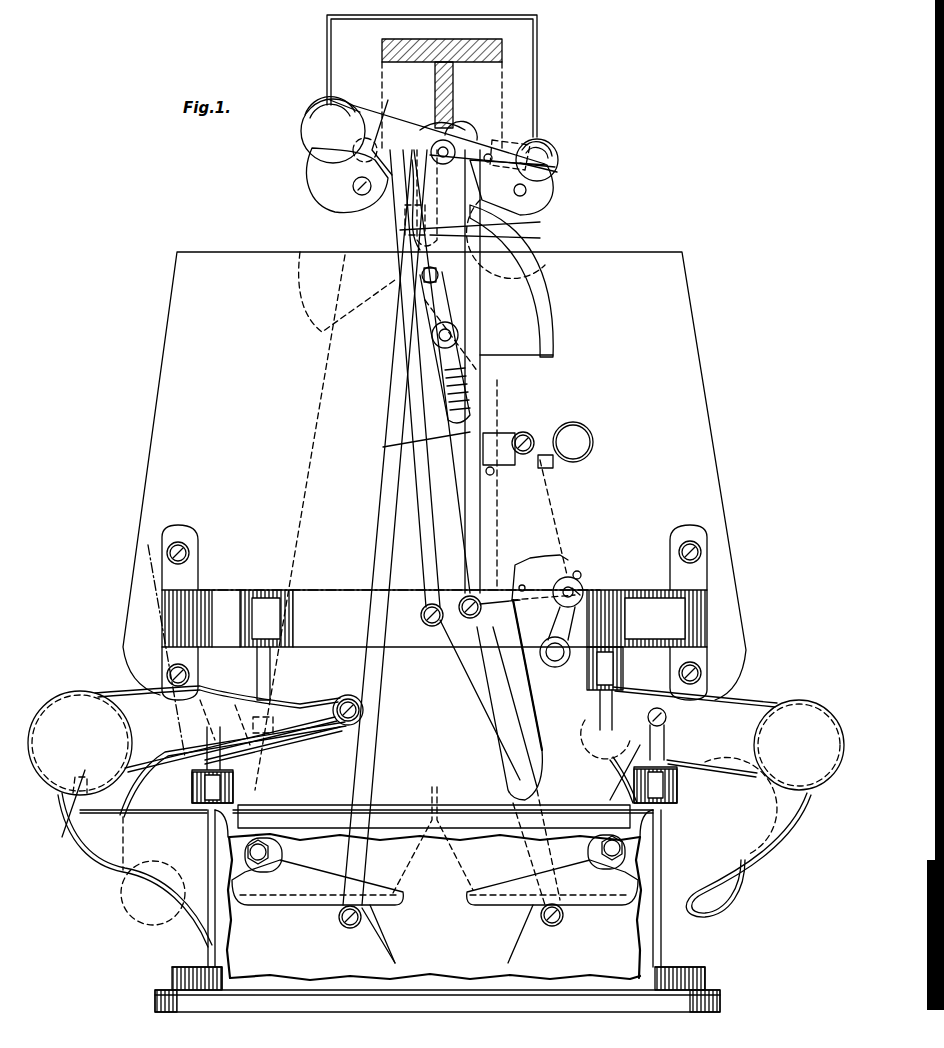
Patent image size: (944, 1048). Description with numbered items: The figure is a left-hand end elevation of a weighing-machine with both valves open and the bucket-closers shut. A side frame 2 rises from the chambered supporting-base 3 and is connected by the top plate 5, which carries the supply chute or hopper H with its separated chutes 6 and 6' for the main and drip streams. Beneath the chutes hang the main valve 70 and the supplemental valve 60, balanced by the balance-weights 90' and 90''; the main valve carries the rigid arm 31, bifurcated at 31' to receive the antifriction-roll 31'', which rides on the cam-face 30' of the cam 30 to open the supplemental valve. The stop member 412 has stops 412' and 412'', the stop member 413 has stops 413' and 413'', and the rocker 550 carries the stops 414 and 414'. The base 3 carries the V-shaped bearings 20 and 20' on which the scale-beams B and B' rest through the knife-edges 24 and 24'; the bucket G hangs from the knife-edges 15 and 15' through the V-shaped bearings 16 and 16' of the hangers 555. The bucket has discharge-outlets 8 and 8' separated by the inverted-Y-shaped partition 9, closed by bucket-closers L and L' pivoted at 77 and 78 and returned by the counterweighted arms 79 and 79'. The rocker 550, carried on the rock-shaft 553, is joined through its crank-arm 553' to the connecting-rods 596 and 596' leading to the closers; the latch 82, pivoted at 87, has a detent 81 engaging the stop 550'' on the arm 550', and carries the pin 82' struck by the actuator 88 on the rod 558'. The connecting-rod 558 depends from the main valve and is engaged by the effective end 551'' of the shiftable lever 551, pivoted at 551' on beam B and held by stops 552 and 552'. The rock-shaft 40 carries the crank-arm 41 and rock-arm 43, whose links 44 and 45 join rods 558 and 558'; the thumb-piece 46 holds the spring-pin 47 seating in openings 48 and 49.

The supply chute or hopper H is at (432, 82).
The bucket G is at (434, 504).
The chute 6 is at (331, 126).
The chute 6' is at (539, 152).
The balance-weight 90' is at (437, 121).
The balance-weight 90'' is at (560, 152).
The top plate or beam 5 is at (336, 166).
The stop member 412 is at (395, 128).
The stop 412' is at (498, 218).
The stop 412'' is at (518, 160).
The stop member 413 is at (530, 187).
The stop 413' is at (377, 220).
The stop 413'' is at (349, 150).
The stop 414 is at (512, 281).
The stop 414' is at (544, 321).
The arm 31 is at (432, 134).
The bifurcated portion 31' is at (464, 116).
The antifriction-roll 31'' is at (483, 138).
The cam 30 is at (510, 142).
The cam-face 30' is at (433, 200).
The supplemental valve 60 is at (548, 262).
The main valve 70 is at (259, 561).
The rocker 550 is at (512, 347).
The arm 550' is at (411, 356).
The detent or stop 550'' is at (406, 451).
The rock-shaft 553 is at (406, 339).
The rocker crank-arm 553' is at (475, 286).
The connecting-rod 558 is at (381, 378).
The rod 558' is at (506, 371).
The connecting-rod 596 is at (375, 527).
The connecting-rod 596' is at (490, 371).
The hanger 555 is at (315, 593).
The detent or stop 81 is at (480, 432).
The latch actuator or releaser device 88 is at (505, 430).
The latch 82 is at (570, 431).
The pin or stop 82' is at (508, 481).
The pivot 87 is at (552, 462).
The V-shaped bearing 16 is at (278, 661).
The V-shaped bearing 16' is at (595, 746).
The crank-arm 41 is at (605, 625).
The rock-arm 43 is at (615, 652).
The connecting-link 44 is at (453, 613).
The connecting-link 45 is at (492, 598).
The thumb-piece 46 is at (577, 586).
The spring-pin 47 is at (582, 592).
The opening 48 is at (578, 572).
The opening 49 is at (523, 590).
The rock-shaft 40 is at (553, 660).
The side frame or upright 2 is at (535, 722).
The effective end 551'' is at (475, 700).
The pivot 551' is at (377, 722).
The counterpoise or shiftable lever 551 is at (217, 777).
The stop 552 is at (65, 809).
The stop 552' is at (80, 770).
The scale-beam B is at (84, 735).
The scale-beam B' is at (794, 736).
The pivot or knife-edge 24 is at (217, 729).
The pivot or knife-edge 24' is at (695, 732).
The pivot or knife-edge 15 is at (273, 753).
The pivot or knife-edge 15' is at (606, 772).
The V-shaped bearing 20 is at (195, 765).
The V-shaped bearing 20' is at (674, 785).
The chambered supporting-base 3 is at (208, 943).
The bucket-closer L is at (317, 900).
The bucket-closer L' is at (552, 899).
The pivot 77 is at (248, 852).
The pivot 78 is at (625, 848).
The discharge-outlet 8 is at (353, 934).
The discharge-outlet 8' is at (564, 921).
The inverted-Y-shaped wall or partition 9 is at (455, 852).
The counterweighted arm 79 is at (135, 870).
The counterweighted arm 79' is at (748, 837).